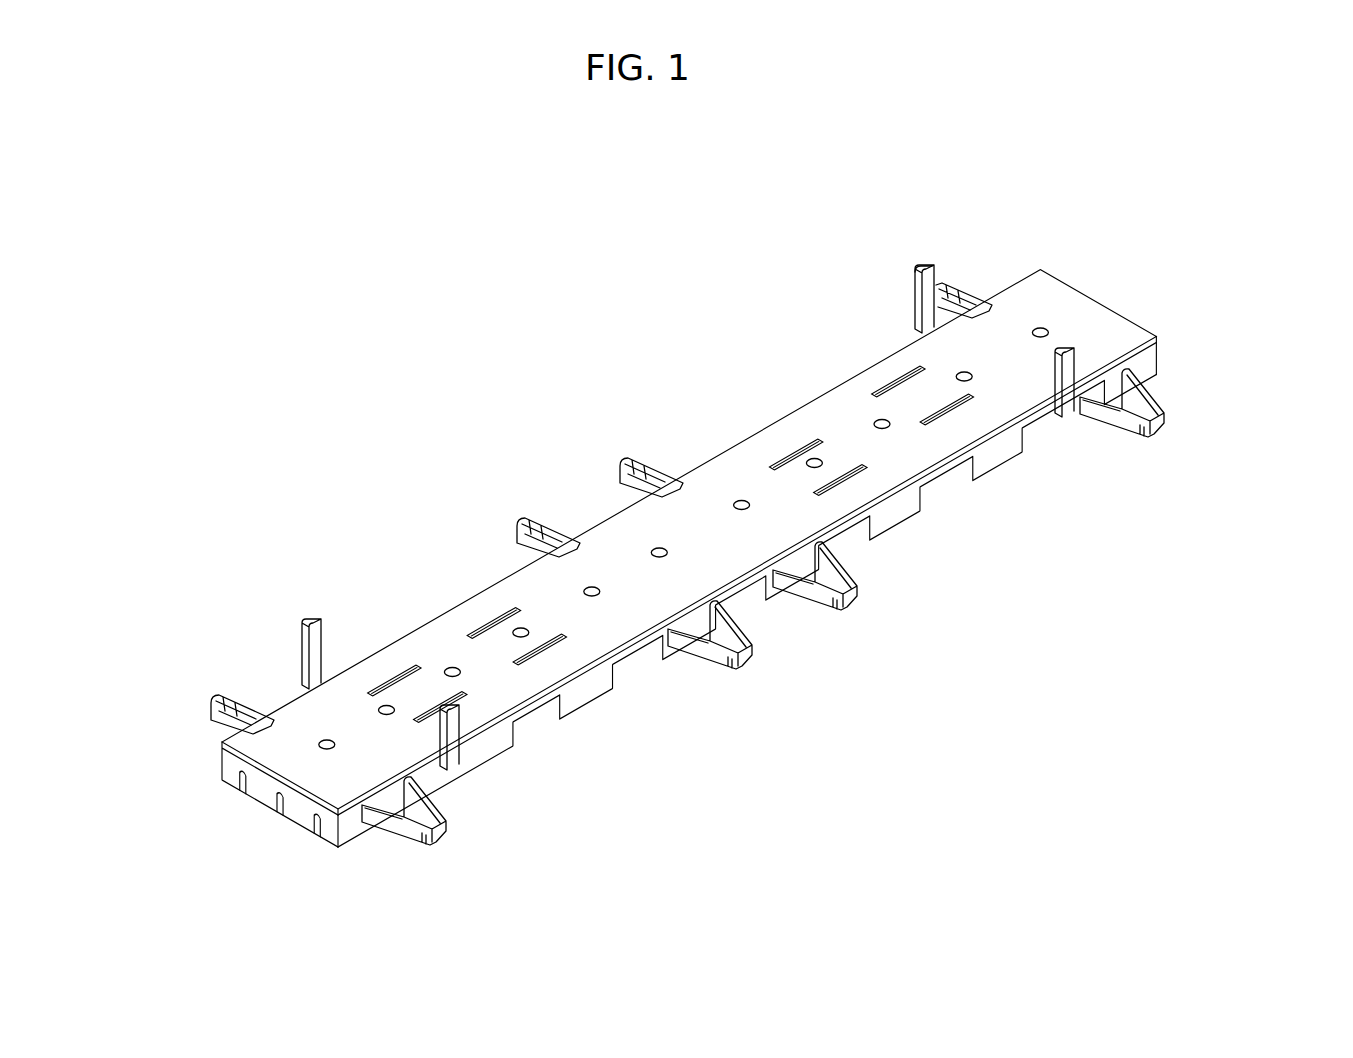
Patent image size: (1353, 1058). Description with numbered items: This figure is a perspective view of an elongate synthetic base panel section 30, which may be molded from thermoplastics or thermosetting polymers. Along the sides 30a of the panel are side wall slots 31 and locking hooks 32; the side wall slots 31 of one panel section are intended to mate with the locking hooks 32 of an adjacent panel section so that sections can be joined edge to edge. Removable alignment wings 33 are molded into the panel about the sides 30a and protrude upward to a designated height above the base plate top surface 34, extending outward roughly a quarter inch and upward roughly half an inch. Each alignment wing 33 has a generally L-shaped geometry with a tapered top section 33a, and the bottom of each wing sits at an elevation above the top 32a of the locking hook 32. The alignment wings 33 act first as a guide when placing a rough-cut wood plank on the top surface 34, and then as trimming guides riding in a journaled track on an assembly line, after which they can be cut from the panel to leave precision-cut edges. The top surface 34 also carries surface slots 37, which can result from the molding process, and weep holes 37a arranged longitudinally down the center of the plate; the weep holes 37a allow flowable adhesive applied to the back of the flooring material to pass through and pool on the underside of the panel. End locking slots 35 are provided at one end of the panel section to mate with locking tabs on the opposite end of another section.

The base panel section 30 is at (704, 383).
The side of plate section 30a is at (1103, 388).
The side wall slots 31 is at (993, 458).
The locking hooks 32 is at (968, 298).
The top of locking hook 32a is at (653, 468).
The alignment wings 33 is at (917, 302).
The tapered top section 33a is at (928, 276).
The base plate top surface 34 is at (1120, 332).
The end locking slots 35 is at (243, 792).
The surface slots 37 is at (898, 385).
The weep holes 37a is at (1045, 331).